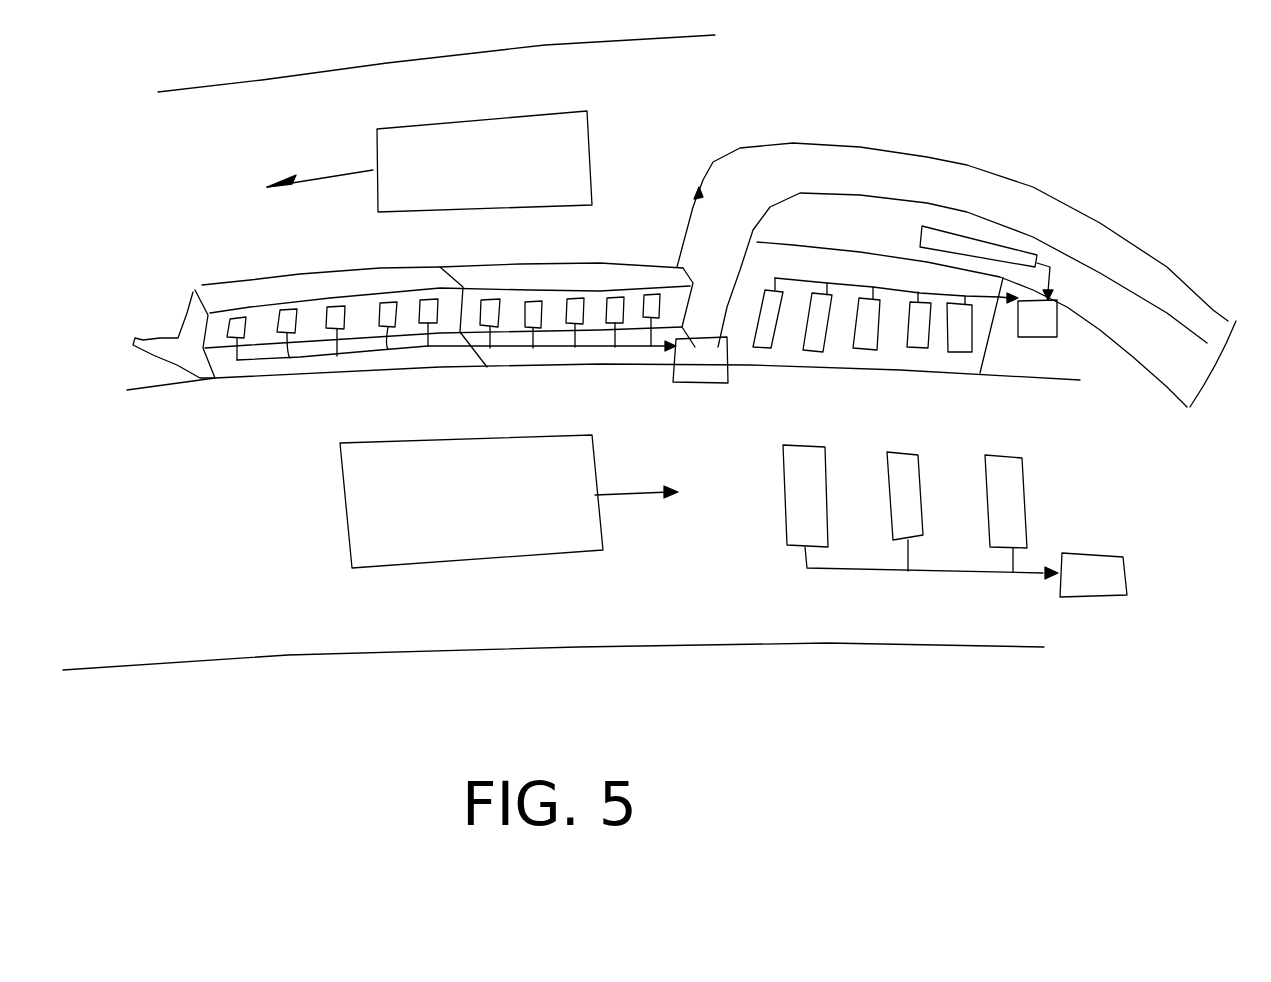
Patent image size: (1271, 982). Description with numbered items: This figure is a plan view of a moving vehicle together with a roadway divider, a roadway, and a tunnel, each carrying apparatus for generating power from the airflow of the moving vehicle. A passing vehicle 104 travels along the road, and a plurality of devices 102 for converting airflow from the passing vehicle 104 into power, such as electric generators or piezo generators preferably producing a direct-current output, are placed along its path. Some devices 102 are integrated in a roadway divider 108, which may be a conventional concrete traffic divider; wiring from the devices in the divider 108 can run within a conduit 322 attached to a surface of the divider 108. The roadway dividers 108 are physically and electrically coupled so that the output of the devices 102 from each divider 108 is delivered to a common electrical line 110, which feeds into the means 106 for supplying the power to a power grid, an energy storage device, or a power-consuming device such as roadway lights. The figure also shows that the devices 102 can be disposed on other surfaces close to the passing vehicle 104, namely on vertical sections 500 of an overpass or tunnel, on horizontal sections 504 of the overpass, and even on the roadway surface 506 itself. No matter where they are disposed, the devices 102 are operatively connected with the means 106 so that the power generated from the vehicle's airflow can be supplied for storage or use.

The device for converting airflow into power 102 is at (283, 308).
The passing vehicle 104 is at (487, 118).
The means for supplying the power 106 is at (900, 448).
The roadway divider 108 is at (345, 270).
The common electrical line 110 is at (333, 355).
The conduit 322 is at (277, 357).
The vertical section of overpass 500 is at (898, 282).
The horizontal section of overpass 504 is at (1073, 277).
The roadway surface 506 is at (297, 158).